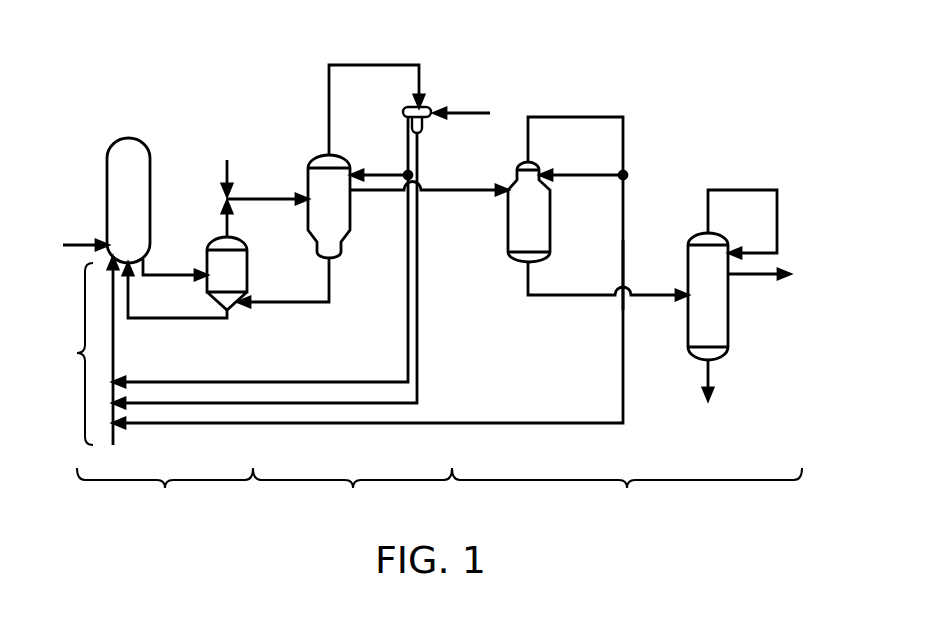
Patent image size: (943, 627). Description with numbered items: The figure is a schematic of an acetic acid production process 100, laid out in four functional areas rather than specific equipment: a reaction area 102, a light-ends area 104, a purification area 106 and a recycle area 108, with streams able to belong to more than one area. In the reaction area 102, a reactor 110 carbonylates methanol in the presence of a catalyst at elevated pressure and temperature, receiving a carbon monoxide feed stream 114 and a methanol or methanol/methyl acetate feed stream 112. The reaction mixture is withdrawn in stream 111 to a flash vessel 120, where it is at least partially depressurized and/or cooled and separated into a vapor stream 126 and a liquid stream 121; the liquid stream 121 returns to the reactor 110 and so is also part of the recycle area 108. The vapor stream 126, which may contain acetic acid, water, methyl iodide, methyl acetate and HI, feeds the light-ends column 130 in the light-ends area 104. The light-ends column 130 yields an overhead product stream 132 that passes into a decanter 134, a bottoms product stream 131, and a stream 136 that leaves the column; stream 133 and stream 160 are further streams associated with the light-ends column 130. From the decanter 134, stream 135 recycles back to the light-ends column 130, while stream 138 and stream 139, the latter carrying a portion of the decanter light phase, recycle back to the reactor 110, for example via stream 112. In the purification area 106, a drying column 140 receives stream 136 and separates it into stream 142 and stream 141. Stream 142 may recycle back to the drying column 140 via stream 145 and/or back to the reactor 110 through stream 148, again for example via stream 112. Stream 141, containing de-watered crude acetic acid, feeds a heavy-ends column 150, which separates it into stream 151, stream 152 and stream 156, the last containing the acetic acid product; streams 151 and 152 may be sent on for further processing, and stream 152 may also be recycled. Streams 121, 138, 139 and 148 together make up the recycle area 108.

The acetic acid production process 100 is at (167, 44).
The reaction area 102 is at (165, 491).
The light-ends area 104 is at (352, 491).
The purification area 106 is at (627, 491).
The recycle area 108 is at (65, 354).
The reactor 110 is at (107, 152).
The stream 111 is at (168, 275).
The methanol or methanol/methyl acetate feed stream 112 is at (113, 358).
The carbon monoxide feed stream 114 is at (78, 245).
The flash vessel 120 is at (214, 242).
The liquid stream 121 is at (205, 319).
The vapor stream 126 is at (263, 199).
The light-ends column 130 is at (309, 160).
The stream 131 is at (290, 302).
The stream 132 is at (376, 65).
The stream 133 is at (465, 113).
The decanter 134 is at (416, 104).
The stream 135 is at (385, 175).
The stream 136 is at (457, 191).
The stream 138 is at (417, 268).
The stream 139 is at (408, 253).
The drying column 140 is at (512, 176).
The stream 141 is at (572, 295).
The stream 142 is at (574, 117).
The stream 145 is at (587, 175).
The stream 148 is at (623, 273).
The heavy-ends column 150 is at (692, 237).
The stream 151 is at (708, 372).
The stream 152 is at (741, 190).
The stream 156 is at (751, 274).
The stream 160 is at (227, 170).